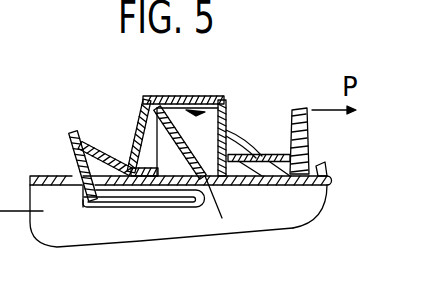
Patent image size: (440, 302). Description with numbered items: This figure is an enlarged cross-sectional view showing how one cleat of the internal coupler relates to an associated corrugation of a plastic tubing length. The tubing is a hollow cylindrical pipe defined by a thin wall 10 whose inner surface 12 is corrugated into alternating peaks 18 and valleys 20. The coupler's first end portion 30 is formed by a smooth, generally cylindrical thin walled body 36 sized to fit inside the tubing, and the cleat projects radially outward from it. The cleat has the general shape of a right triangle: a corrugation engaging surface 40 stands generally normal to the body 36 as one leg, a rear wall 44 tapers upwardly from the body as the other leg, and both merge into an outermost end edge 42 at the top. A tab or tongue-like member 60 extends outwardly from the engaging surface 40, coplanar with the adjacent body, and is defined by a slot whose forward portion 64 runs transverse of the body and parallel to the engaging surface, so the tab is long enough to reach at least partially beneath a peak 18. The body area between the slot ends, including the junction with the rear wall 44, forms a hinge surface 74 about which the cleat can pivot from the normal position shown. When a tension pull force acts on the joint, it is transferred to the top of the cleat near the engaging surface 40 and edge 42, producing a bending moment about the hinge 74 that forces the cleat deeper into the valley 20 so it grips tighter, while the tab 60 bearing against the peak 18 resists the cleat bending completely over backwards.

The thin wall 10 is at (186, 107).
The inner surface 12 is at (153, 185).
The peak 18 is at (109, 150).
The valley 20 is at (228, 108).
The first end portion 30 is at (316, 155).
The thin walled body 36 is at (290, 185).
The corrugation engaging surface 40 is at (135, 143).
The outermost end edge 42 is at (151, 97).
The rear wall 44 is at (220, 113).
The tab or tongue-like member 60 is at (127, 186).
The forward portion 64 is at (87, 188).
The hinge surface 74 is at (222, 218).